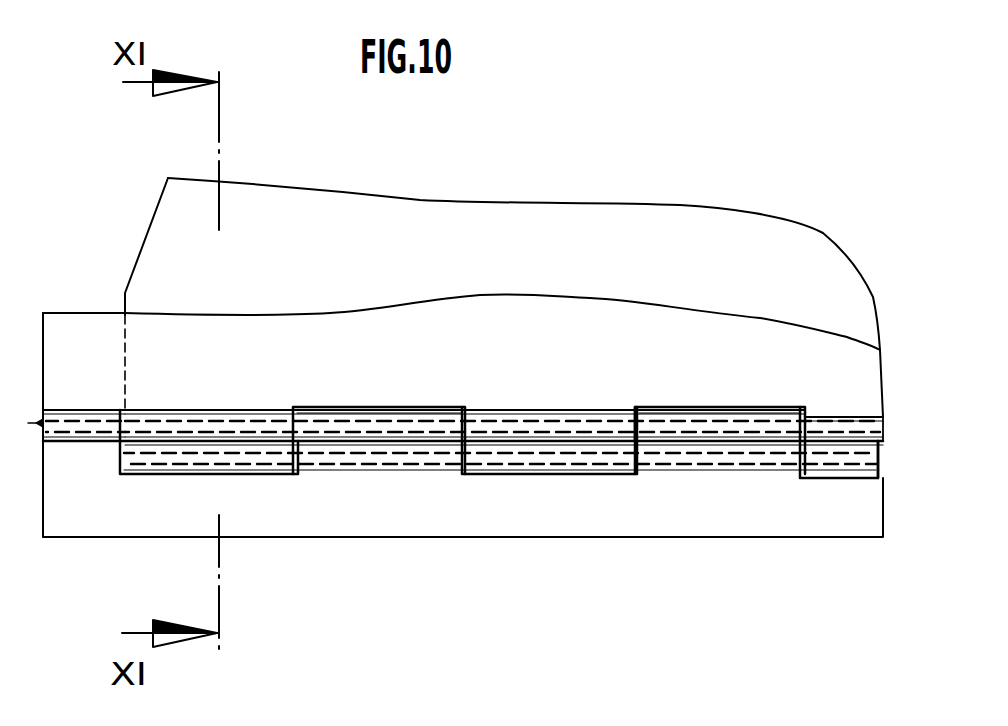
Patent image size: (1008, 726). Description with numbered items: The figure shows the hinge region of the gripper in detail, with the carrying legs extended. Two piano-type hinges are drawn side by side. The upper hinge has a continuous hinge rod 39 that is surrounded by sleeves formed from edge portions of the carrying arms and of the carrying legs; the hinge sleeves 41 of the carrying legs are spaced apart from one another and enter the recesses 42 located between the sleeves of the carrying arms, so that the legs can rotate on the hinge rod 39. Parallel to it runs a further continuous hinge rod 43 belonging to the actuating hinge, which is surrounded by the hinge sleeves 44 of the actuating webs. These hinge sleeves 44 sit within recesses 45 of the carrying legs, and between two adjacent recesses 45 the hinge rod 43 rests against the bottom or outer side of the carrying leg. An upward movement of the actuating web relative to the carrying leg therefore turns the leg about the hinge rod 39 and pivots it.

The hinge rod 39 is at (92, 433).
The hinge sleeves of the carrying legs 41 is at (437, 410).
The recesses 42 is at (652, 407).
The hinge rod 43 is at (421, 468).
The hinge sleeves of the actuating webs 44 is at (250, 462).
The recesses 45 is at (282, 474).